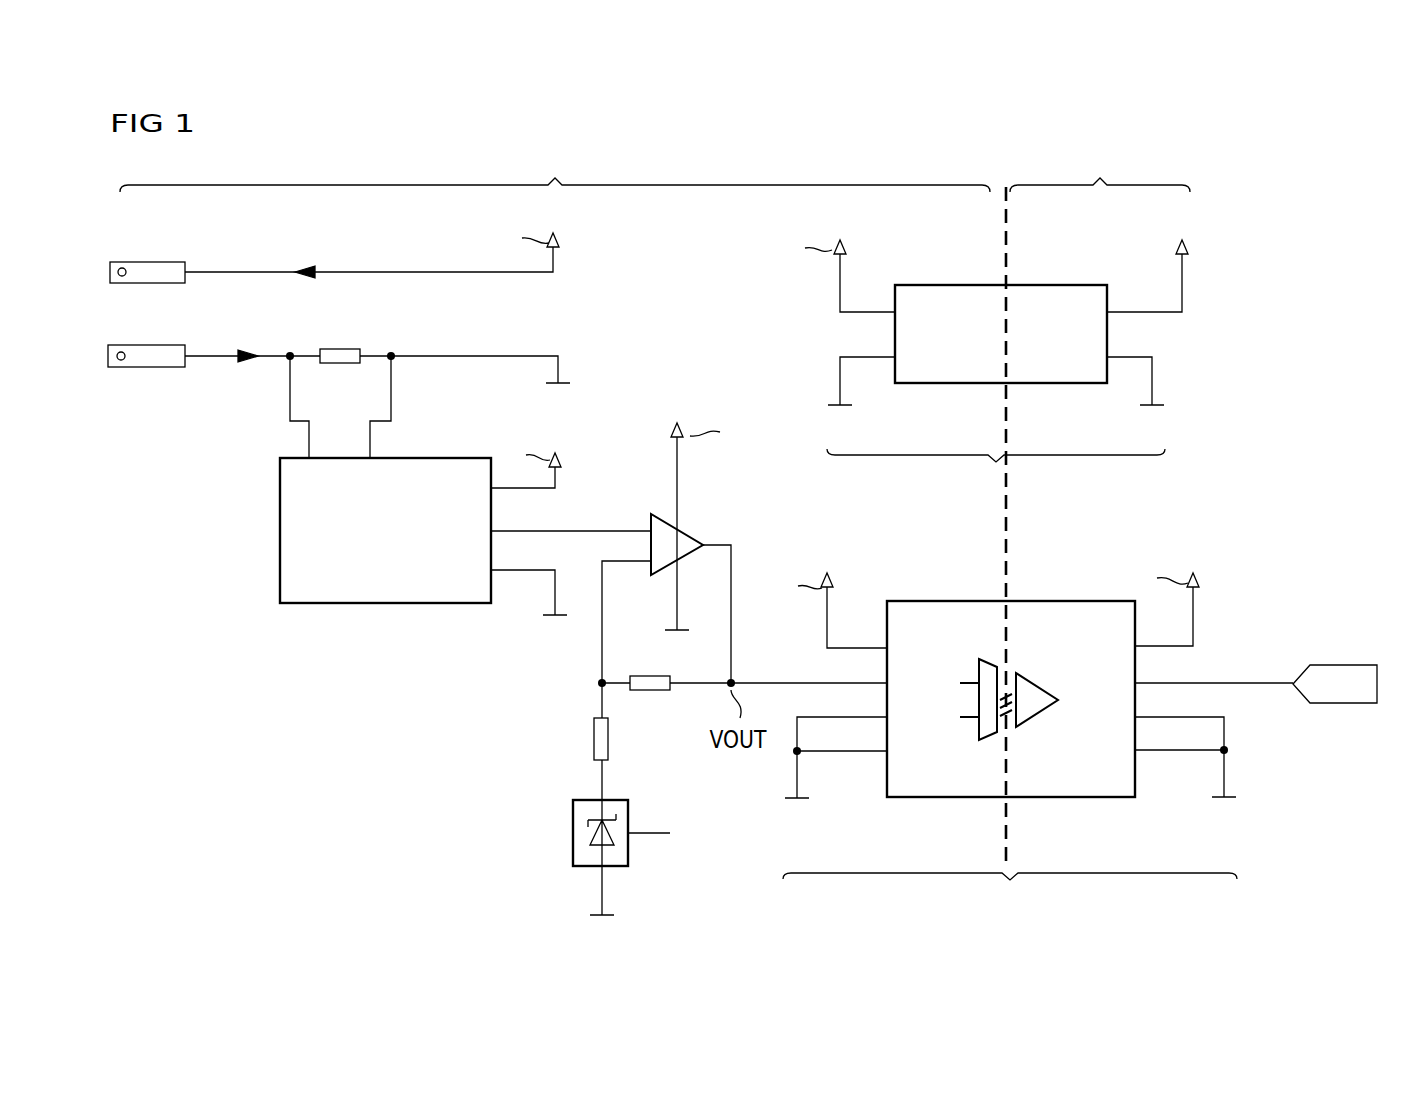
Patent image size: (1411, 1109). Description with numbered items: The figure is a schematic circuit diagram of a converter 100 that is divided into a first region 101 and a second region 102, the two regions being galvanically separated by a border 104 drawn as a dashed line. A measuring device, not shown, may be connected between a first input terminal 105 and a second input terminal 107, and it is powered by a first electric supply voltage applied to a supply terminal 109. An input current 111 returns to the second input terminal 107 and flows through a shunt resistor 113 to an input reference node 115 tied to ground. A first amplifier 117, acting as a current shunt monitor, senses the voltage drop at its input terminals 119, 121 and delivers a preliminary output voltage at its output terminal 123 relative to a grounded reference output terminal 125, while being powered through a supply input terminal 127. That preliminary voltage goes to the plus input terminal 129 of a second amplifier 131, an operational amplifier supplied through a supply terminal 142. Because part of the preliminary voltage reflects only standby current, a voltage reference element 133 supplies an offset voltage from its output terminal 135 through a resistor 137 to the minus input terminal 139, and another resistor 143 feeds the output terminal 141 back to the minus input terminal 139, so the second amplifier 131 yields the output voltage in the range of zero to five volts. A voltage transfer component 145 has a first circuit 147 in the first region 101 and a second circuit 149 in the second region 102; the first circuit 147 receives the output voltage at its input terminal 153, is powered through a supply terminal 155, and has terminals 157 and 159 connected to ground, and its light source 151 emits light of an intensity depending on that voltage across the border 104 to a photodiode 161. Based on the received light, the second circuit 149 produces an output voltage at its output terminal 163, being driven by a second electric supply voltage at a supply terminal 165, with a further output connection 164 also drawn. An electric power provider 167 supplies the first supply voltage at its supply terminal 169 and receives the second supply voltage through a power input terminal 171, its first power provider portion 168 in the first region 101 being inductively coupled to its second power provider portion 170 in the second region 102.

The converter 100 is at (1289, 190).
The first region 101 is at (555, 169).
The second region 102 is at (1100, 169).
The border 104 is at (1008, 234).
The first input terminal 105 is at (147, 262).
The second input terminal 107 is at (147, 367).
The supply terminal 109 is at (556, 262).
The input current 111 is at (298, 268).
The shunt resistor 113 is at (341, 348).
The input reference node 115 is at (565, 379).
The first amplifier 117 is at (385, 604).
The input terminal of the first amplifier 119 is at (305, 458).
The input terminal of the first amplifier 121 is at (372, 458).
The output terminal of the first amplifier 123 is at (496, 534).
The reference output terminal 125 is at (496, 573).
The supply input terminal of the first amplifier 127 is at (496, 491).
The plus input terminal 129 is at (650, 527).
The second amplifier 131 is at (674, 522).
The voltage reference element 133 is at (573, 834).
The output terminal of the voltage reference element 135 is at (606, 800).
The resistor 137 is at (594, 741).
The minus input terminal 139 is at (651, 566).
The output terminal of the second amplifier 141 is at (706, 545).
The supply terminal of the second amplifier 142 is at (681, 526).
The another resistor 143 is at (652, 676).
The voltage transfer component 145 is at (1010, 757).
The first circuit 147 is at (941, 601).
The second circuit 149 is at (1067, 601).
The light source 151 is at (988, 659).
The input terminal of the first circuit 153 is at (887, 684).
The supply terminal of the first circuit 155 is at (887, 643).
The terminal 157 is at (887, 718).
The terminal 159 is at (887, 754).
The photodiode 161 is at (1043, 728).
The output terminal of the second circuit 163 is at (1138, 685).
The output VOUT- 164 is at (1138, 719).
The supply terminal of the second circuit 165 is at (1138, 642).
The electric power provider 167 is at (996, 390).
The first power provider portion 168 is at (950, 384).
The supply terminal of the electric power provider 169 is at (893, 306).
The second power provider portion 170 is at (1048, 384).
The power input terminal 171 is at (1198, 580).